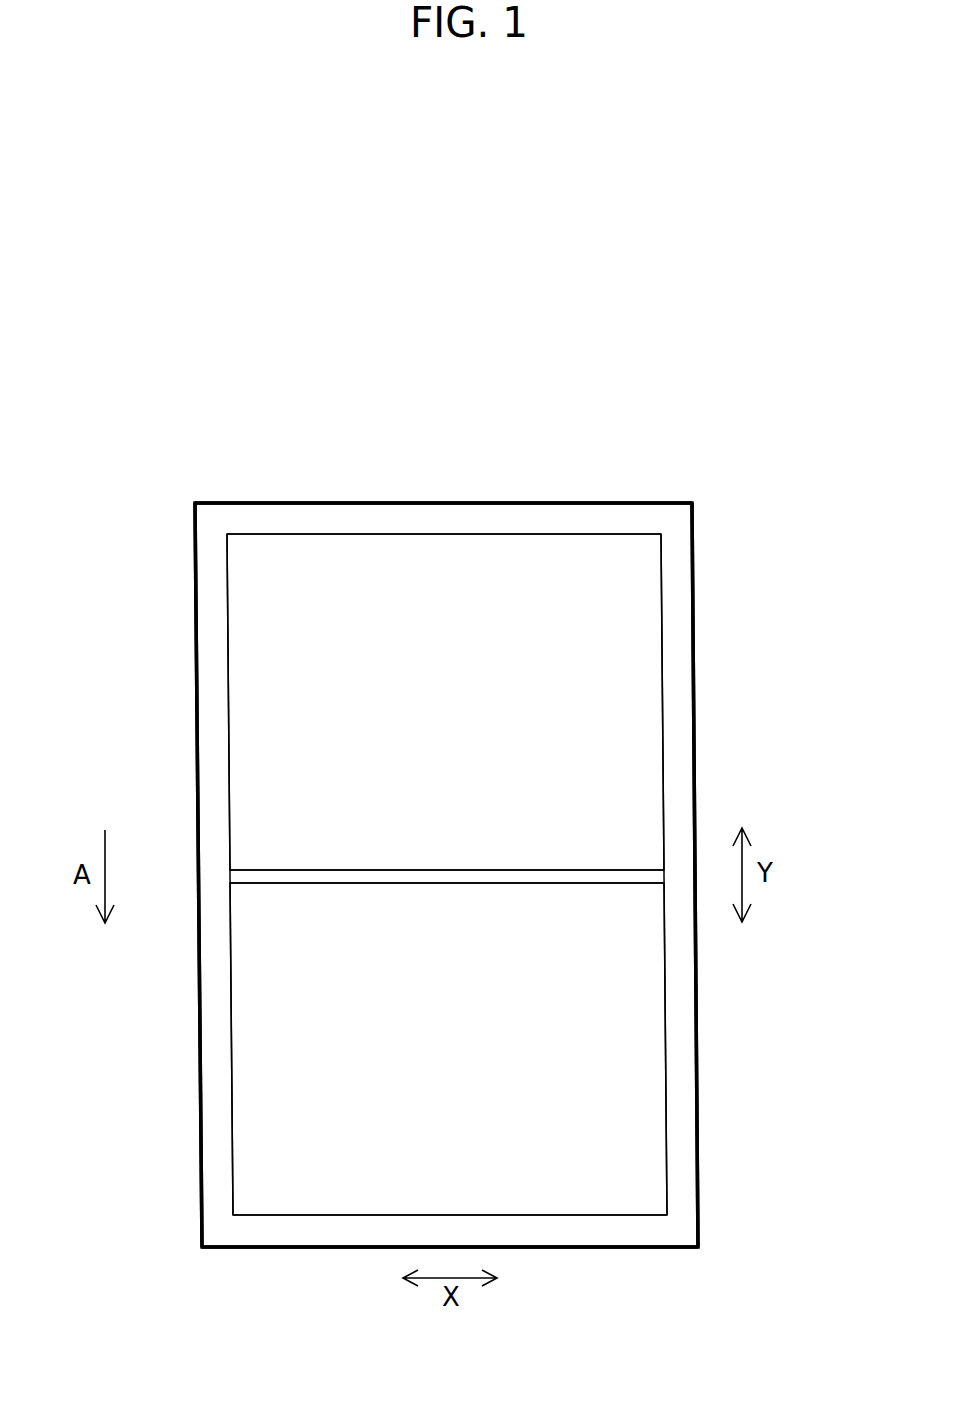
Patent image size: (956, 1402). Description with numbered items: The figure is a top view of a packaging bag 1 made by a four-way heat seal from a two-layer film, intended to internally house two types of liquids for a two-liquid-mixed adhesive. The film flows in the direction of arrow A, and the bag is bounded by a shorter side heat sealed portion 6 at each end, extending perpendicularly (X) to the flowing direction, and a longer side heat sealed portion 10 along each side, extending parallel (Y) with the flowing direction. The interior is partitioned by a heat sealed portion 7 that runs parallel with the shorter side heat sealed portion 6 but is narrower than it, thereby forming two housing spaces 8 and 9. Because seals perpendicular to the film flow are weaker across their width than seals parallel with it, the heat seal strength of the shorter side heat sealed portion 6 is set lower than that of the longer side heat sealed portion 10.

The packaging bag 1 is at (718, 580).
The shorter side heat sealed portion 6 is at (426, 522).
The heat sealed portion 7 is at (460, 875).
The housing space 8 is at (648, 720).
The housing space 9 is at (649, 1078).
The longer side heat sealed portion 10 is at (217, 1092).